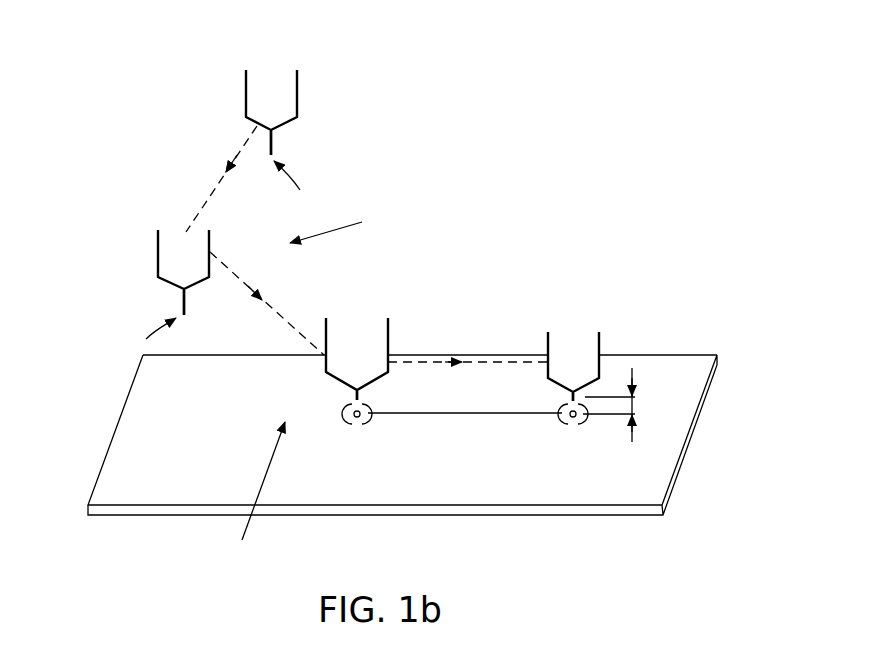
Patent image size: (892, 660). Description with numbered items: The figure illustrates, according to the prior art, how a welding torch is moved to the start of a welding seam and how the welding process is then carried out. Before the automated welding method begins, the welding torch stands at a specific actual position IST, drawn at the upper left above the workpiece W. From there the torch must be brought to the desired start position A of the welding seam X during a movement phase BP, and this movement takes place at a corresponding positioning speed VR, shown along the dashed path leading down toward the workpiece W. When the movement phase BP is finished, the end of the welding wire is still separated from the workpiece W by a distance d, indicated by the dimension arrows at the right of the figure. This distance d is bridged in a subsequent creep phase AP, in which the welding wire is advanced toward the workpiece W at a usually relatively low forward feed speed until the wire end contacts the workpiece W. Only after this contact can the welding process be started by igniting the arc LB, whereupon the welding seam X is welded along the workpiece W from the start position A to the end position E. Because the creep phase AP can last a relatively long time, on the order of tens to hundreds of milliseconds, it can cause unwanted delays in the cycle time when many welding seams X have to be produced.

The actual position IST is at (207, 61).
The positioning speed VR is at (255, 240).
The movement phase BP is at (341, 225).
The arc LB is at (368, 398).
The workpiece W is at (668, 362).
The creep phase AP is at (256, 495).
The start position A is at (360, 418).
The welding seam X is at (468, 414).
The end position E is at (576, 418).
The distance d is at (633, 405).